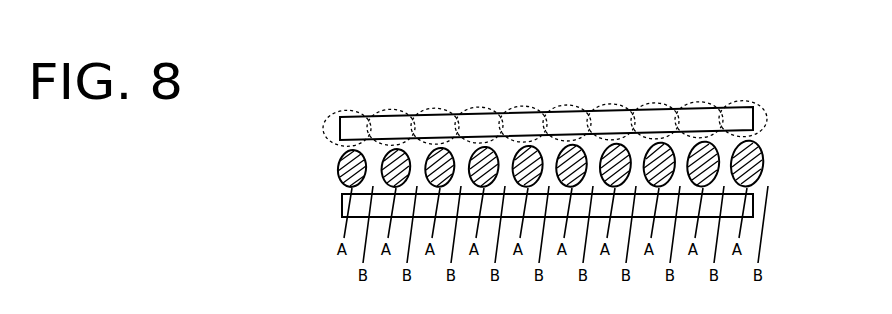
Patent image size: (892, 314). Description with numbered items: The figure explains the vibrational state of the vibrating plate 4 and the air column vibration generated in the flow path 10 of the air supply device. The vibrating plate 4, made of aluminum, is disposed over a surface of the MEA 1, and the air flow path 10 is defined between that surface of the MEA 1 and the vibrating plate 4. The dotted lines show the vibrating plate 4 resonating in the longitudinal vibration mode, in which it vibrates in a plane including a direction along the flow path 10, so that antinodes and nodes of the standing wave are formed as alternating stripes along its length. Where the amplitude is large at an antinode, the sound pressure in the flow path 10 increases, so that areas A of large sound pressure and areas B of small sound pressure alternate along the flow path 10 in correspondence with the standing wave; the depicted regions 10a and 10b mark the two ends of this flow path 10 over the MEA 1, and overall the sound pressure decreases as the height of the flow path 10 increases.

The MEA 1 is at (750, 207).
The vibrating plate 4 is at (745, 118).
The air flow path 10 is at (551, 124).
The first electrode 10a is at (334, 170).
The last electrode 10b is at (766, 163).